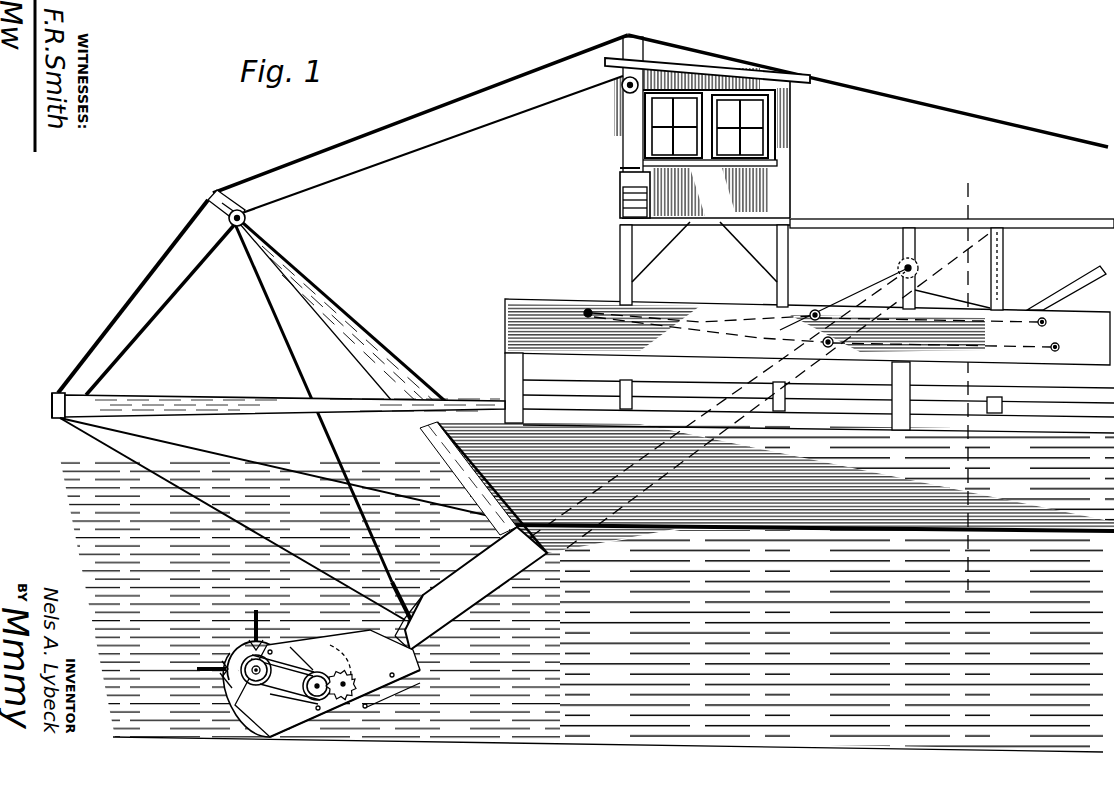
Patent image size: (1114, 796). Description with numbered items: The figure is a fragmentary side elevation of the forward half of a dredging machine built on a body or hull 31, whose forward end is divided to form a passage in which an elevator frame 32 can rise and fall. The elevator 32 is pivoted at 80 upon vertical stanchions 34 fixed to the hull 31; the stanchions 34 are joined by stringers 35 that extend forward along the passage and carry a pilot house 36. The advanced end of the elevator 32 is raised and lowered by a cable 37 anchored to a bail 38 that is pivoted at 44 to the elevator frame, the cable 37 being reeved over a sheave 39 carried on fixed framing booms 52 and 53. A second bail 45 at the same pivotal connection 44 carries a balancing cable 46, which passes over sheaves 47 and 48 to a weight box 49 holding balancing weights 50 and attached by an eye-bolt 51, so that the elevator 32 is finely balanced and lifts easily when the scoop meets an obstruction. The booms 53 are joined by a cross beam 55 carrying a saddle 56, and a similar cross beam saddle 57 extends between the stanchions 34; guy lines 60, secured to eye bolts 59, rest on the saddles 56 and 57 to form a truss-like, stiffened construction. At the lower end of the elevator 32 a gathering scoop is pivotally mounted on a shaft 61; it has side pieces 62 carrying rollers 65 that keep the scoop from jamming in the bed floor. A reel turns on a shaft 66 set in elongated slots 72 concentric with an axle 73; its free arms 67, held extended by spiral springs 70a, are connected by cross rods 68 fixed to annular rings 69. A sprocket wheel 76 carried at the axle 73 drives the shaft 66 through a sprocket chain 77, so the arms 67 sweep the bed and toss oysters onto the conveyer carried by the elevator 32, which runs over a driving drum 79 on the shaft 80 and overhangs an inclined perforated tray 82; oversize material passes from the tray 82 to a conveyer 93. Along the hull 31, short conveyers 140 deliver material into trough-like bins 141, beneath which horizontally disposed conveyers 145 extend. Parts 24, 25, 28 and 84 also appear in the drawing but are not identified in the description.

The sprocket wheel 24 is at (316, 676).
The sprocket wheel 25 is at (353, 680).
The casing 28 is at (240, 650).
The hull 31 is at (587, 467).
The elevator frame 32 is at (476, 588).
The vertical stanchions 34 is at (620, 256).
The stringers 35 is at (862, 220).
The pilot house 36 is at (789, 198).
The cable 37 is at (149, 320).
The bail 38 is at (404, 622).
The sheave 39 is at (90, 400).
The pivotal connection 44 is at (417, 624).
The second bail 45 is at (415, 622).
The balancing cable 46 is at (450, 142).
The sheave 47 is at (246, 217).
The sheave 48 is at (623, 90).
The weight box 49 is at (620, 182).
The balancing weights 50 is at (652, 197).
The eye-bolt 51 is at (622, 168).
The framing booms 52 is at (210, 400).
The framing booms 53 is at (360, 331).
The cross beam 55 is at (230, 205).
The saddle 56 is at (212, 192).
The cross beam saddle 57 is at (637, 37).
The eye bolts 59 is at (56, 395).
The guy lines 60 is at (425, 120).
The shaft 61 is at (367, 707).
The side pieces 62 is at (322, 652).
The rollers 65 is at (335, 720).
The shaft 66 is at (226, 684).
The free arms 67 is at (256, 618).
The cross rods 68 is at (262, 652).
The annular rings 69 is at (280, 648).
The spiral springs 70a is at (250, 640).
The elongated slots 72 is at (262, 706).
The axle 73 is at (296, 702).
The sprocket wheel 76 is at (286, 677).
The sprocket chain 77 is at (300, 655).
The driving drum 79 is at (899, 282).
The shaft 80 is at (900, 266).
The tray 82 is at (940, 300).
The chain 84 is at (52, 405).
The conveyer 93 is at (1062, 300).
The short conveyers 140 is at (684, 309).
The trough-like bins 141 is at (506, 370).
The horizontally disposed conveyers 145 is at (565, 388).